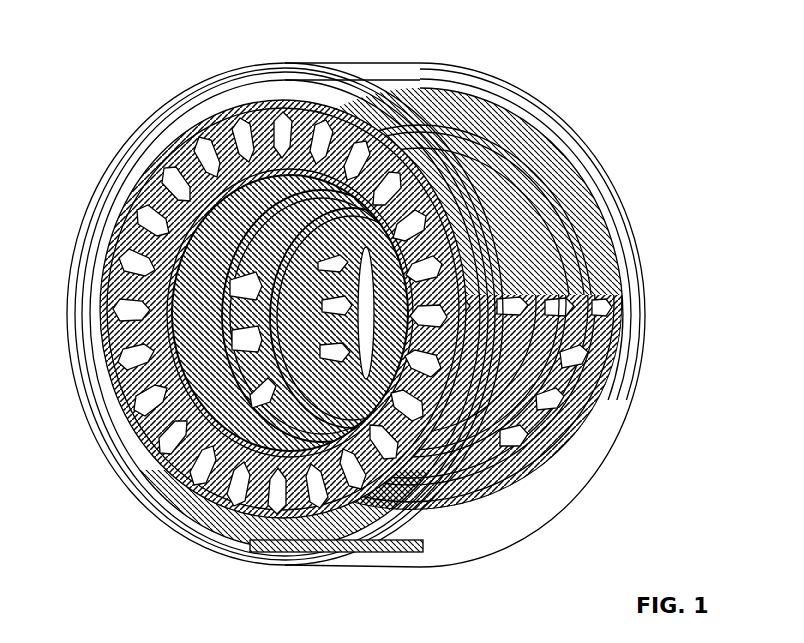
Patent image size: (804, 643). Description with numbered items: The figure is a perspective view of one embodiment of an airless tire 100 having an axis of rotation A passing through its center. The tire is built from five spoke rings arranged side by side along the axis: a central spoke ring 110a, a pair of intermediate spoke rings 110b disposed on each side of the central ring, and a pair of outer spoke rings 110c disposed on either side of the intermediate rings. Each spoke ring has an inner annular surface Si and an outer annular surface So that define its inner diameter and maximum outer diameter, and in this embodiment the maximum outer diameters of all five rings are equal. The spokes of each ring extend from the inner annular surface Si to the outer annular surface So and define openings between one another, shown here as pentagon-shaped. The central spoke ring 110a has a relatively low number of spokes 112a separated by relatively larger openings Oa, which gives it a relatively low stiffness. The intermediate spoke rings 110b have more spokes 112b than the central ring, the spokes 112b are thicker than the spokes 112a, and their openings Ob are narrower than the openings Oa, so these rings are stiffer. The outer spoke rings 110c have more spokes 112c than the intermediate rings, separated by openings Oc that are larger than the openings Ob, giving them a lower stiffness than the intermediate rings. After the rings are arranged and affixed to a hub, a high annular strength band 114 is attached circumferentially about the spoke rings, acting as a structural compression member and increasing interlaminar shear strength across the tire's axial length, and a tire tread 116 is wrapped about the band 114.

The airless tire 100 is at (76, 50).
The central spoke ring 110a is at (440, 295).
The intermediate spoke ring 110b is at (605, 318).
The outer spoke ring 110c is at (560, 395).
The spoke 112a is at (235, 500).
The spoke 112b is at (200, 462).
The spoke 112c is at (165, 405).
The high annular strength band 114 is at (493, 118).
The tire tread 116 is at (90, 197).
The axis of rotation A is at (72, 350).
The spoke opening Oa is at (272, 205).
The spoke opening Ob is at (420, 400).
The spoke opening Oc is at (143, 228).
The inner annular surface Si is at (425, 245).
The outer annular surface So is at (437, 235).